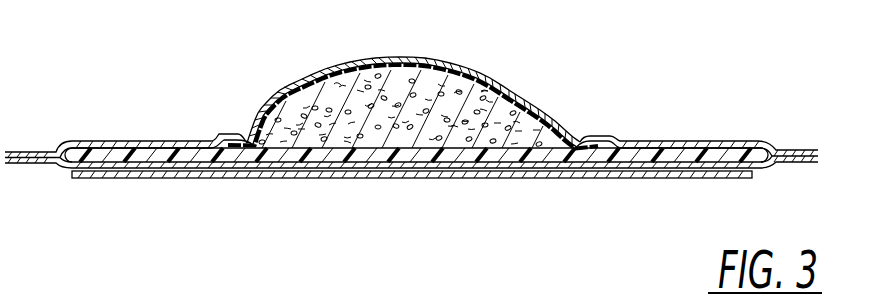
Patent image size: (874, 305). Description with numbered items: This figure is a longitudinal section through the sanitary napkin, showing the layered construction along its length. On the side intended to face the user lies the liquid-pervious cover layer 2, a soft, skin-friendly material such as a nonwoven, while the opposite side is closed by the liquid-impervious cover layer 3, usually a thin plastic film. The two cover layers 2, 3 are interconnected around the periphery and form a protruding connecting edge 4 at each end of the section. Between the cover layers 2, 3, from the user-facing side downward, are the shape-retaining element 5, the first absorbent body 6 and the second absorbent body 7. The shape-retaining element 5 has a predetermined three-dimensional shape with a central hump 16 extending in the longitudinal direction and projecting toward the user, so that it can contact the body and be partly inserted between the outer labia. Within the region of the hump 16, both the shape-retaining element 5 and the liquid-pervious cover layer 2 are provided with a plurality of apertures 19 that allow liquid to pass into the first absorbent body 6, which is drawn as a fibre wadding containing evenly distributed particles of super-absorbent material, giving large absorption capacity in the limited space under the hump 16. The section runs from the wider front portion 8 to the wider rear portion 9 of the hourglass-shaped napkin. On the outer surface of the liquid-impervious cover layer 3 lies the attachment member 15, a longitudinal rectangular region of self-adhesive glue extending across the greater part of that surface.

The liquid-pervious cover layer 2 is at (660, 143).
The liquid-impervious cover layer 3 is at (122, 167).
The protruding connecting edge 4 is at (30, 150).
The shape-retaining element 5 is at (278, 107).
The first absorbent body 6 is at (505, 123).
The second absorbent body 7 is at (502, 153).
The front portion 8 is at (710, 152).
The rear portion 9 is at (85, 152).
The attachment member 15 is at (613, 178).
The central hump 16 is at (368, 85).
The apertures 19 is at (328, 66).